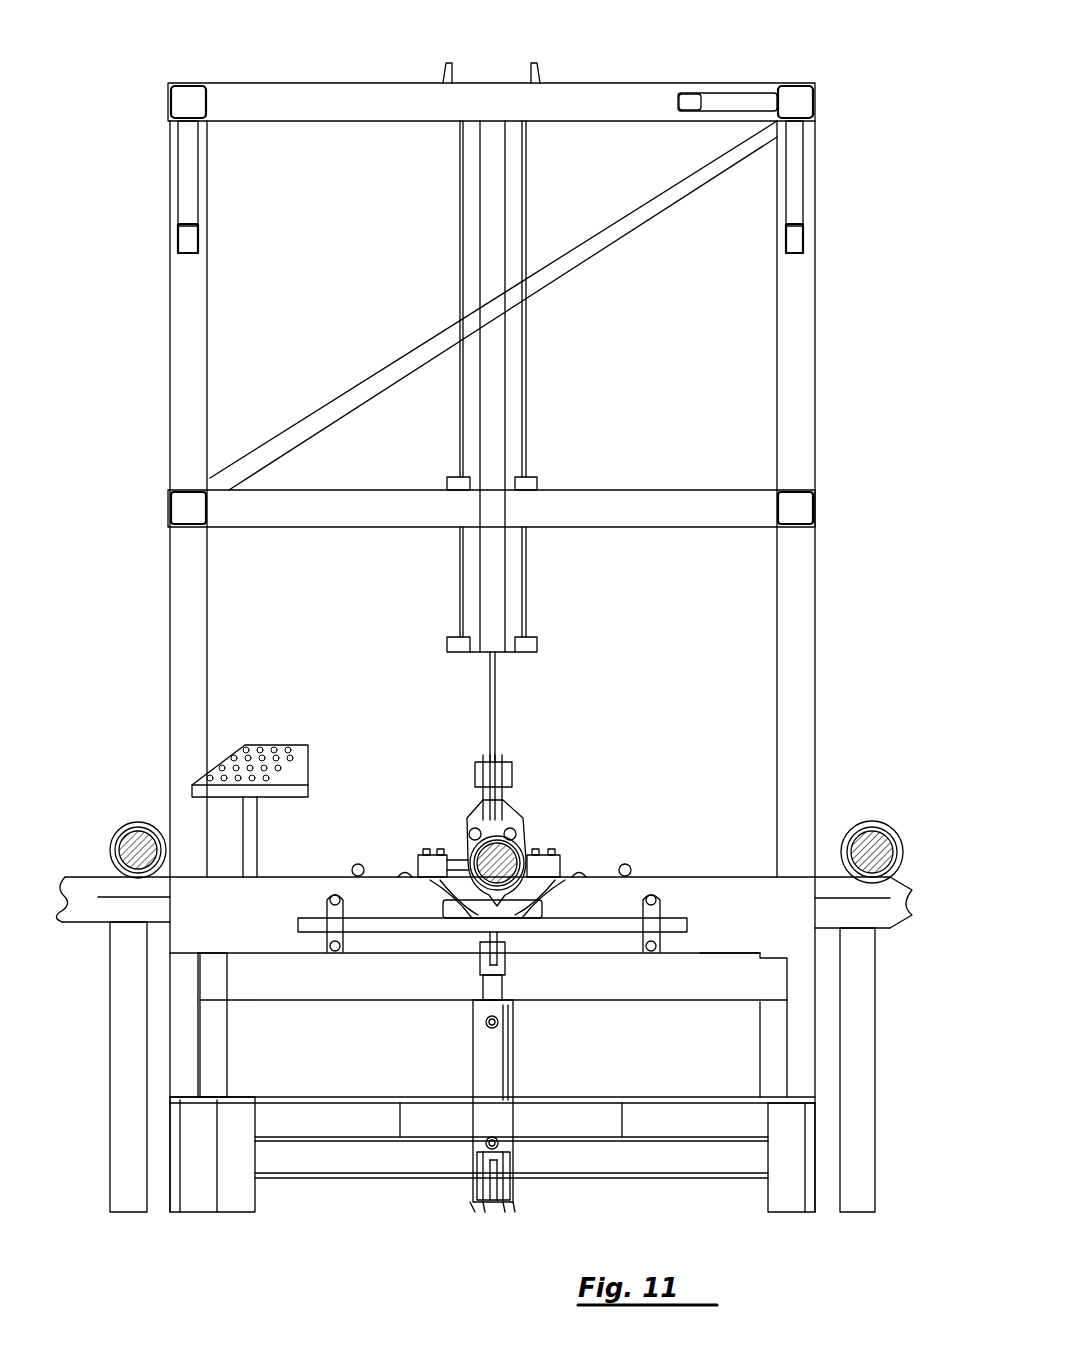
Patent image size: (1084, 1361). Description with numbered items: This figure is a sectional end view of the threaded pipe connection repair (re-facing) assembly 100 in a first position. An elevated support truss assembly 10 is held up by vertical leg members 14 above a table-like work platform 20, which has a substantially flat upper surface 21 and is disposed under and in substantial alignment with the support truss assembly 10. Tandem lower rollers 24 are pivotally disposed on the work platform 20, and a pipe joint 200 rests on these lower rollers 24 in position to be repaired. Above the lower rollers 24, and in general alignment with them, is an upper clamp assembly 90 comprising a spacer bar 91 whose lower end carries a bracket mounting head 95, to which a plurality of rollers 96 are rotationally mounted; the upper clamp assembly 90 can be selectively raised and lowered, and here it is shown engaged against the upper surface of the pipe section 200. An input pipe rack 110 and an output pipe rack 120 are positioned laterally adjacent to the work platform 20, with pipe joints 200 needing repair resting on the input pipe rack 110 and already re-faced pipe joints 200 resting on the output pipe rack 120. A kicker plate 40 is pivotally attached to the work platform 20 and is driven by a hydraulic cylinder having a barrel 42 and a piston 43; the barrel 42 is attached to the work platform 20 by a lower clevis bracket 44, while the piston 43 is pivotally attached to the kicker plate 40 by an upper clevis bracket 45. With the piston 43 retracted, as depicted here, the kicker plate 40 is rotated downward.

The elevated support truss assembly 10 is at (282, 77).
The threaded pipe connection repair (re-facing) assembly 100 is at (893, 210).
The vertical leg members 14 is at (180, 566).
The spacer bar 91 is at (497, 676).
The bracket mounting head 95 is at (510, 800).
The upper clamp assembly 90 is at (464, 806).
The rollers 96 is at (463, 830).
The tandem lower rollers 24 is at (441, 858).
The pipe joint 200 is at (524, 860).
The upper surface 21 is at (745, 953).
The work platform 20 is at (258, 992).
The kicker plate 40 is at (380, 922).
The upper clevis bracket 45 is at (505, 960).
The piston 43 is at (487, 985).
The barrel 42 is at (505, 1062).
The lower clevis bracket 44 is at (507, 1175).
The input pipe rack 110 is at (90, 920).
The output pipe rack 120 is at (886, 918).